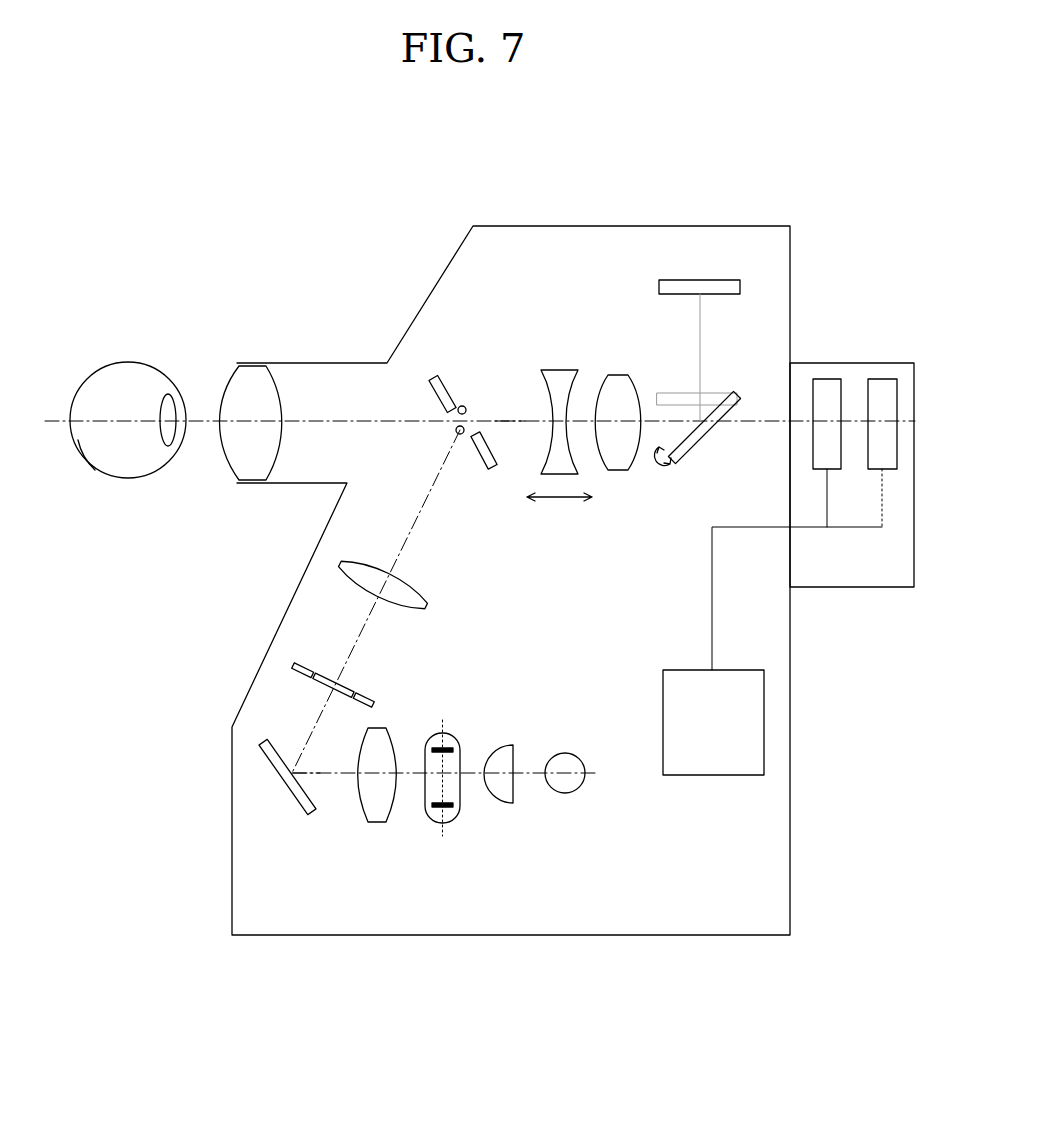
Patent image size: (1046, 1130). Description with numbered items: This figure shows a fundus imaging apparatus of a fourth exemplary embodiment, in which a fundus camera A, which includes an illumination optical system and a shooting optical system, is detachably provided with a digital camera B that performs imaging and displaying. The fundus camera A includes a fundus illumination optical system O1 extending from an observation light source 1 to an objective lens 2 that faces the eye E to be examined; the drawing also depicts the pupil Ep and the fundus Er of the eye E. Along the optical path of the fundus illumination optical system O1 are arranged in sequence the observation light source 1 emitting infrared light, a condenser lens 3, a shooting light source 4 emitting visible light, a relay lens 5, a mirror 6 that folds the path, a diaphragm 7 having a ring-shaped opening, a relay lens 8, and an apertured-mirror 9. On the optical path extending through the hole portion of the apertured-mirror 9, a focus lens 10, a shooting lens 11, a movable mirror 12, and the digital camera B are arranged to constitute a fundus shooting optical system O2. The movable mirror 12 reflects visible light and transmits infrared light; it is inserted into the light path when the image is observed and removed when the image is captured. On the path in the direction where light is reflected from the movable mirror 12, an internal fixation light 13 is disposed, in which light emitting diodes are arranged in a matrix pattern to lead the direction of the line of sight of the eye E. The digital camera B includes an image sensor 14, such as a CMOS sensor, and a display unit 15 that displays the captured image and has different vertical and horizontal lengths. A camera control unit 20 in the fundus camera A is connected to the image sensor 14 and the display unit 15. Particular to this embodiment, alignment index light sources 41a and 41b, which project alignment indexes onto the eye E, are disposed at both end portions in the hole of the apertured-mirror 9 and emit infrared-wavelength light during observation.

The fundus camera A is at (756, 226).
The digital camera B is at (885, 363).
The eye to be examined E is at (126, 363).
The pupil Ep is at (183, 402).
The retina Er is at (83, 455).
The observation light source 1 is at (571, 793).
The objective lens 2 is at (252, 366).
The condenser lens 3 is at (508, 800).
The shooting light source 4 is at (453, 813).
The relay lens 5 is at (380, 823).
The mirror 6 is at (283, 778).
The diaphragm 7 is at (292, 666).
The relay lens 8 is at (338, 567).
The apertured-mirror 9 is at (438, 378).
The focus lens 10 is at (558, 370).
The shooting lens 11 is at (618, 378).
The movable mirror 12 is at (702, 437).
The internal fixation light 13 is at (658, 287).
The image sensor 14 is at (827, 379).
The display unit 15 is at (899, 456).
The camera control unit 20 is at (764, 711).
The alignment index light source 41a is at (466, 410).
The alignment index light source 41b is at (456, 431).
The fundus illumination optical system O1 is at (331, 775).
The fundus shooting optical system O2 is at (509, 425).